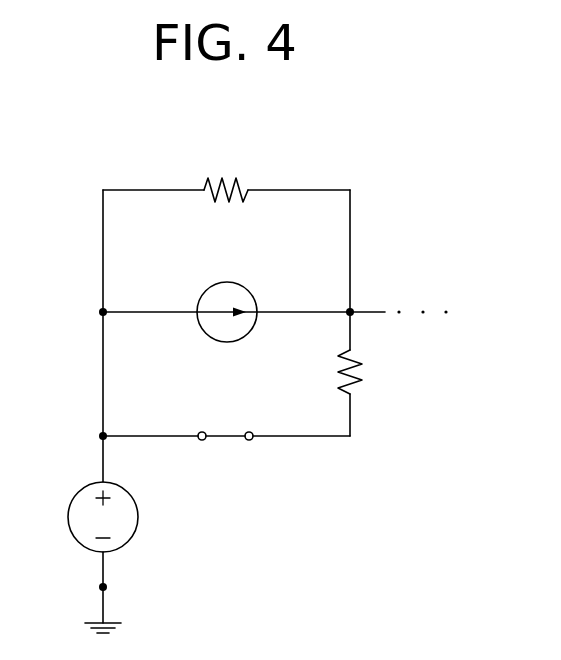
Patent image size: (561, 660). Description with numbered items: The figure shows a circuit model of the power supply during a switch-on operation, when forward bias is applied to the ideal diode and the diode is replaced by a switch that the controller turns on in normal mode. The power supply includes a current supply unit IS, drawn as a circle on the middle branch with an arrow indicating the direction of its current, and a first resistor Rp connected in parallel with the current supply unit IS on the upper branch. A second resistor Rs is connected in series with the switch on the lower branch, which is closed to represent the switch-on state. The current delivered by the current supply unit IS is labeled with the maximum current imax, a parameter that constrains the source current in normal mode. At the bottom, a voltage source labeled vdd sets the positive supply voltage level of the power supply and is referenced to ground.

The first resistor Rp is at (215, 184).
The current supply unit IS is at (225, 282).
The maximum current imax is at (296, 301).
The second resistor Rs is at (343, 370).
The element power supply is at (202, 509).
The positive supply voltage vdd is at (164, 482).